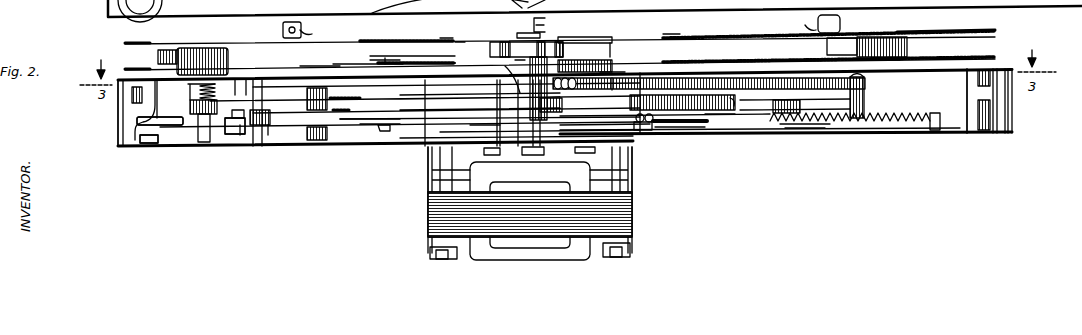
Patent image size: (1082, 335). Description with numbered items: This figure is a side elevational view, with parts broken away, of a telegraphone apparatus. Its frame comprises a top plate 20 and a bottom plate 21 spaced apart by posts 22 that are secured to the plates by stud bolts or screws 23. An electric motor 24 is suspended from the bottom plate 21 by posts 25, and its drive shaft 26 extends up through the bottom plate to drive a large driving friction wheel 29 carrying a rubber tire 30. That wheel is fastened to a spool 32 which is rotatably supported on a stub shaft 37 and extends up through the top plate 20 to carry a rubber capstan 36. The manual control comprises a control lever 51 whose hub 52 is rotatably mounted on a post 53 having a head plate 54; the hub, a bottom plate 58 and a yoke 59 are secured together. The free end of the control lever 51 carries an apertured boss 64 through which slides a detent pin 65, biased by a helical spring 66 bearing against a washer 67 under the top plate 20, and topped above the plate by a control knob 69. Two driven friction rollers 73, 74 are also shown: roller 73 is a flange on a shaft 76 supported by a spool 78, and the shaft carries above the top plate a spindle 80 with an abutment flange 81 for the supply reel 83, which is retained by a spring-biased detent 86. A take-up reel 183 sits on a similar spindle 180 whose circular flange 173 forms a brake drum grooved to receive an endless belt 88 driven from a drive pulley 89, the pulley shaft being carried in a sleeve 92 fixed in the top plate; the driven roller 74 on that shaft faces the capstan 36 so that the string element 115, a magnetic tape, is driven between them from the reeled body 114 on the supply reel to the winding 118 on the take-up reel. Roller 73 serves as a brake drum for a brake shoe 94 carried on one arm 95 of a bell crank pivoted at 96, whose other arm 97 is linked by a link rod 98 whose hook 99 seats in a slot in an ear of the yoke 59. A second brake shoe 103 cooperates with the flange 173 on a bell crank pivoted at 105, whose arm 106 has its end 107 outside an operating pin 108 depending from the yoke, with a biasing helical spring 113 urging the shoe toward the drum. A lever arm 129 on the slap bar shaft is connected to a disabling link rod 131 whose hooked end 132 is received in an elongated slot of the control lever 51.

The top plate 20 is at (1008, 68).
The bottom plate 21 is at (960, 133).
The posts 22 is at (120, 122).
The stud bolts or screws 23 is at (108, 2).
The electric motor 24 is at (633, 208).
The posts 25 is at (428, 167).
The drive shaft 26 is at (533, 155).
The driving friction wheel 29 is at (708, 112).
The rubber tire 30 is at (733, 100).
The spool 32 is at (533, 54).
The capstan 36 is at (524, 28).
The stub shaft 37 is at (546, 28).
The control lever 51 is at (327, 107).
The hub 52 is at (563, 106).
The post 53 is at (505, 68).
The head plate 54 is at (490, 155).
The bottom plate 58 is at (587, 140).
The yoke 59 is at (475, 125).
The apertured boss 64 is at (198, 120).
The detent pin 65 is at (220, 142).
The helical spring 66 is at (212, 90).
The washer 67 is at (190, 88).
The control knob 69 is at (190, 50).
The driven friction roller 73 is at (262, 135).
The driven friction roller 74 is at (598, 37).
The shaft 76 is at (298, 147).
The spool 78 is at (278, 140).
The spindle 80 is at (282, 30).
The abutment flange 81 is at (312, 68).
The supply reel 83 is at (447, 40).
The spring-biased detent 86 is at (302, 33).
The endless belt 88 is at (866, 82).
The drive pulley 89 is at (615, 80).
The sleeve 92 is at (614, 78).
The brake shoe 94 is at (270, 135).
The arm 95 is at (247, 135).
The pivotal support 96 is at (235, 135).
The arm 97 is at (176, 130).
The link rod 98 is at (157, 136).
The hook 99 is at (385, 133).
The brake shoe 103 is at (775, 108).
The pivotal support 105 is at (805, 133).
The arm 106 is at (707, 128).
The end 107 is at (678, 130).
The operating pin 108 is at (638, 135).
The biasing helical spring 113 is at (897, 122).
The reeled body 114 is at (384, 55).
The string element 115 is at (463, 52).
The winding 118 is at (908, 47).
The lever arm 129 is at (433, 88).
The disabling link rod 131 is at (385, 58).
The hooked end 132 is at (241, 88).
The circular flange 173 is at (866, 106).
The spindle 180 is at (842, 28).
The take-up reel 183 is at (975, 35).